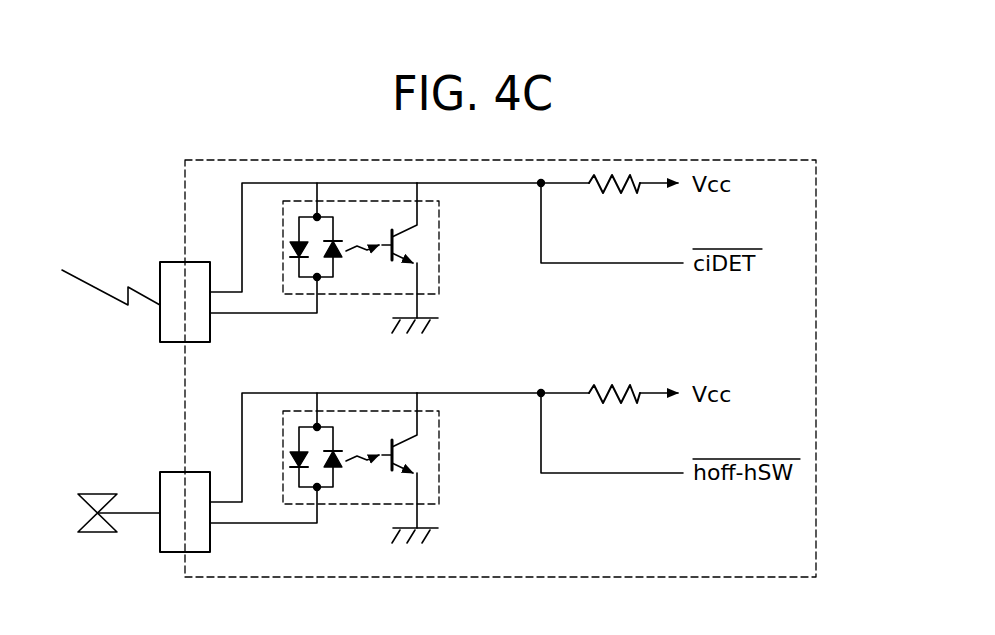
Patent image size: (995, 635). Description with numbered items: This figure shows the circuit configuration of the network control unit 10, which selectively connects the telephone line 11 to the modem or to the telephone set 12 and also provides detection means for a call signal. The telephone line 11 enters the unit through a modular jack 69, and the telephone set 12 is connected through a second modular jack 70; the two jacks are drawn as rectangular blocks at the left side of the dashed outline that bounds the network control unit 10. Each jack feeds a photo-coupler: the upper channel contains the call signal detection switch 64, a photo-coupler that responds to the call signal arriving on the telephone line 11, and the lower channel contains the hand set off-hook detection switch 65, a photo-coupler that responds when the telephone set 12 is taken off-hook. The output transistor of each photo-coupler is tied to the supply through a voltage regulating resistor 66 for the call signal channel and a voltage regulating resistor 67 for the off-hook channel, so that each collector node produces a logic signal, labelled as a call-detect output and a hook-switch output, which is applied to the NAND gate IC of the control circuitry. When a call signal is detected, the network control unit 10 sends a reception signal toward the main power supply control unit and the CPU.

The network control unit 10 is at (816, 483).
The telephone line 11 is at (92, 287).
The telephone set 12 is at (119, 544).
The call signal detection switch 64 is at (440, 253).
The hand set off-hook detection switch 65 is at (393, 460).
The voltage regulating resistor 66 is at (610, 193).
The voltage regulating resistor 67 is at (614, 425).
The modular jack 69 is at (172, 262).
The modular jack 70 is at (171, 476).